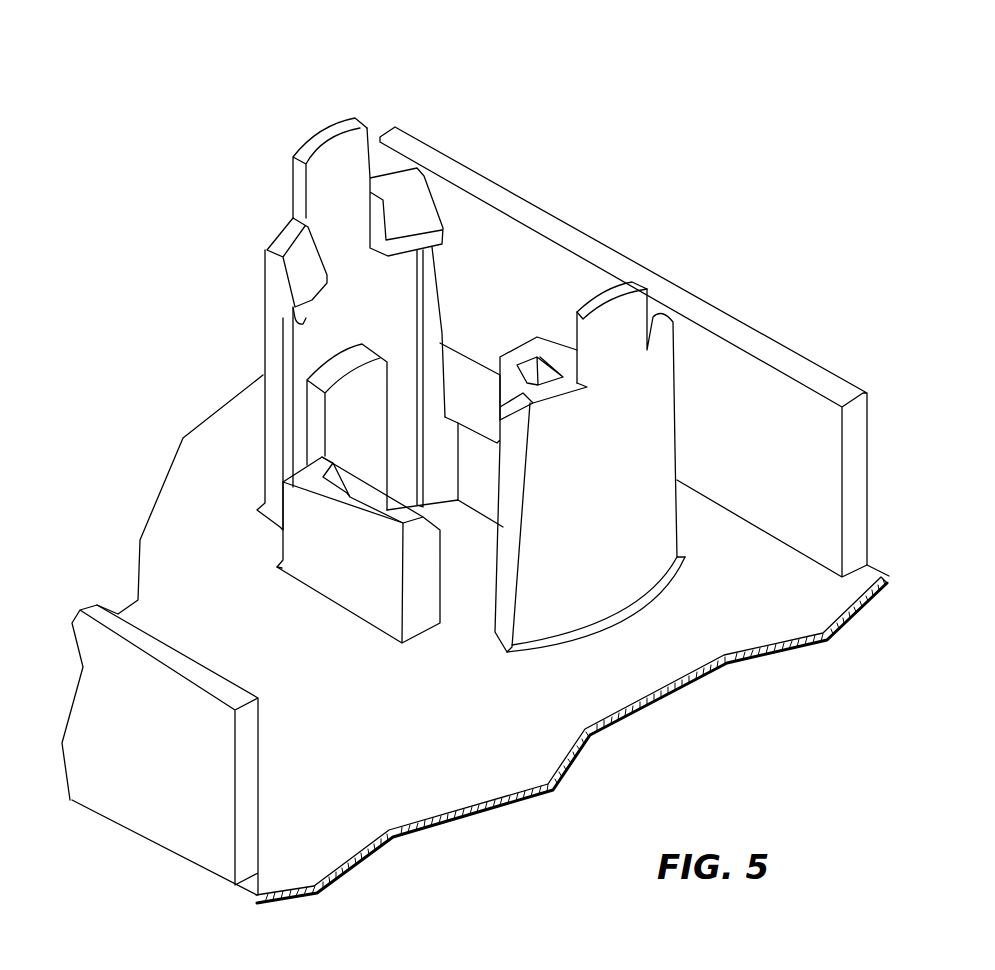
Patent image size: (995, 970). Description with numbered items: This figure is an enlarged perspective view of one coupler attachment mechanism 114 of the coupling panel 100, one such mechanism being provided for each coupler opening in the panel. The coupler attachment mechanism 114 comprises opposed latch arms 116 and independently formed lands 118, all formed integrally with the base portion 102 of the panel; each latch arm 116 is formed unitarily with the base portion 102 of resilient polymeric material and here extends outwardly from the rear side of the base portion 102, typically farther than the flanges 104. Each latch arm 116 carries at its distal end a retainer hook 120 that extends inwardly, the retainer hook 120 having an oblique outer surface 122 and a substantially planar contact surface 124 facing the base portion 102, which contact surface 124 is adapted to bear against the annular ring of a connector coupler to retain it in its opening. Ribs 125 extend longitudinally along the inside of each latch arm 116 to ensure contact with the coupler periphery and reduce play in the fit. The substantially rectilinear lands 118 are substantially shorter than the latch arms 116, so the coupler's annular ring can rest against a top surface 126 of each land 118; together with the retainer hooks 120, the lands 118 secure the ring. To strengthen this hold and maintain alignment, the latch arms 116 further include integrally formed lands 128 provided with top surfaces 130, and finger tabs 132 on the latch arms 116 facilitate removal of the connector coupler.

The coupling panel 100 is at (697, 138).
The base portion 102 is at (463, 820).
The flanges 104 is at (178, 827).
The coupler attachment mechanism 114 is at (315, 93).
The latch arms 116 is at (273, 332).
The lands 118 is at (503, 357).
The retainer hook 120 is at (465, 226).
The oblique outer surface 122 is at (308, 260).
The contact surface 124 is at (375, 257).
The ribs 125 is at (424, 335).
The top surface 126 is at (555, 353).
The lands 128 is at (370, 430).
The top surfaces 130 is at (389, 350).
The finger tabs 132 is at (320, 178).